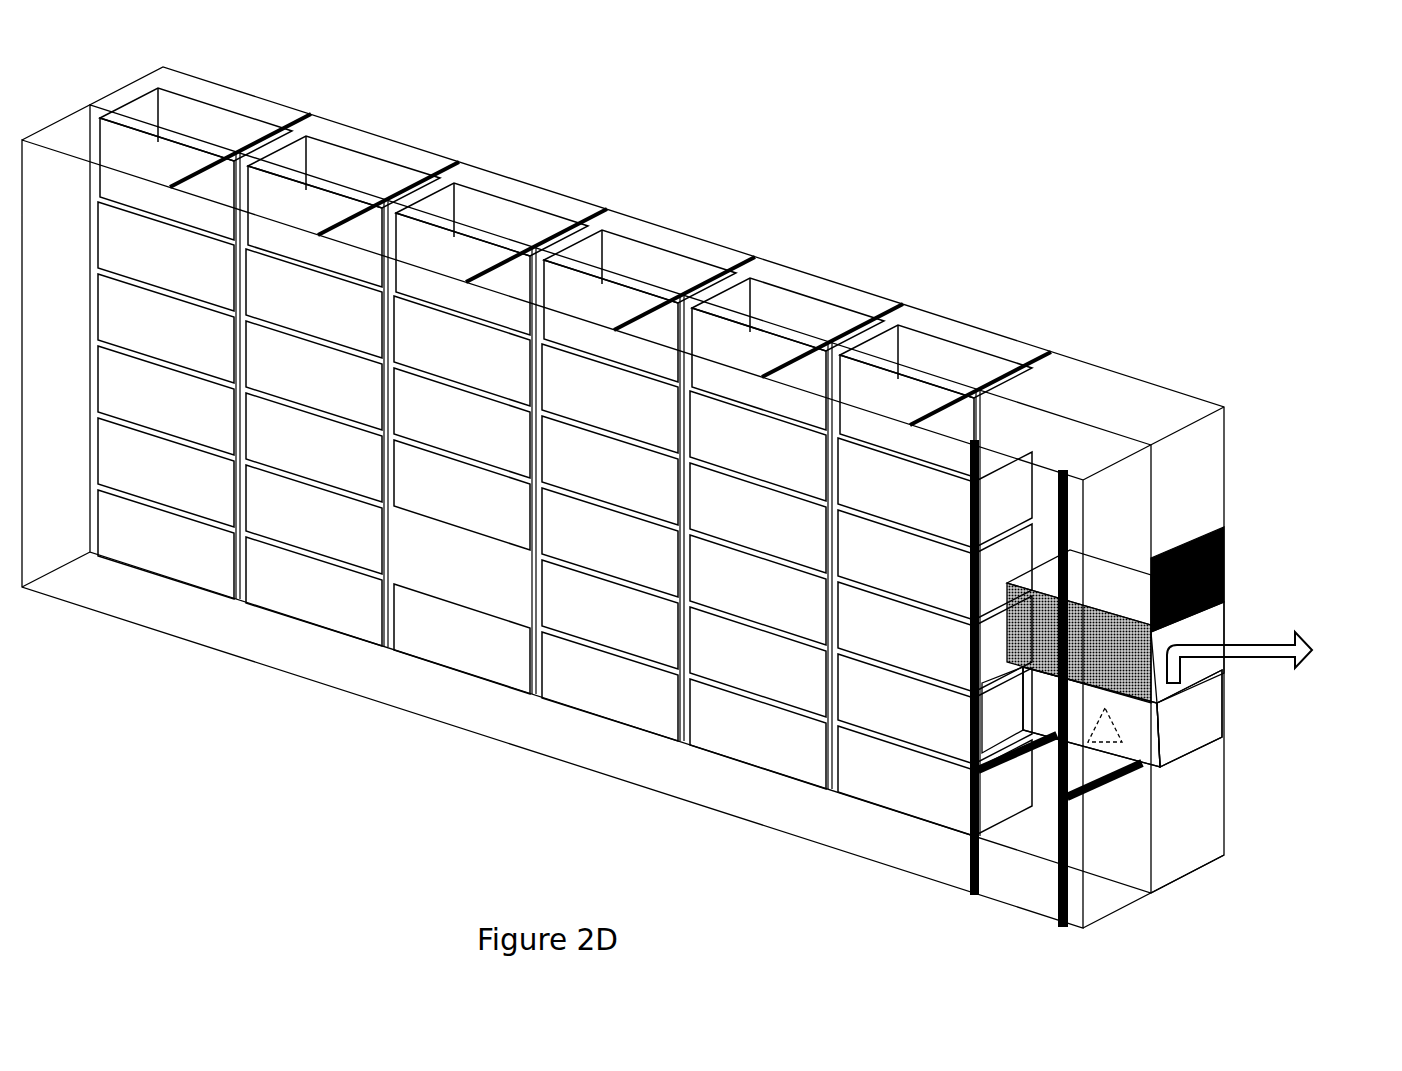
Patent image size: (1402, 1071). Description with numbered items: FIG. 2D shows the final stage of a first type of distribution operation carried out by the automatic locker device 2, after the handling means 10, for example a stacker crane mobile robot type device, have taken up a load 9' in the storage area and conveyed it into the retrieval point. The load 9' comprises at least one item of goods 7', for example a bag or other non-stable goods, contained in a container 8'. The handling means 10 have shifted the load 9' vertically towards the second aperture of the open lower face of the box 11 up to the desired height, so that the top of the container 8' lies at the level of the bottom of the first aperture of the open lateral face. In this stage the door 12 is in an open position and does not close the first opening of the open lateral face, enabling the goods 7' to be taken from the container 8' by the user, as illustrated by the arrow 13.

The storage system 2 is at (647, 188).
The handling means 10 is at (1068, 888).
The box 11 is at (1117, 587).
The door 12 is at (1220, 553).
The arrow 13 is at (1254, 643).
The container 8' is at (1160, 717).
The item of goods 7' is at (1213, 747).
The load 9' is at (1203, 730).